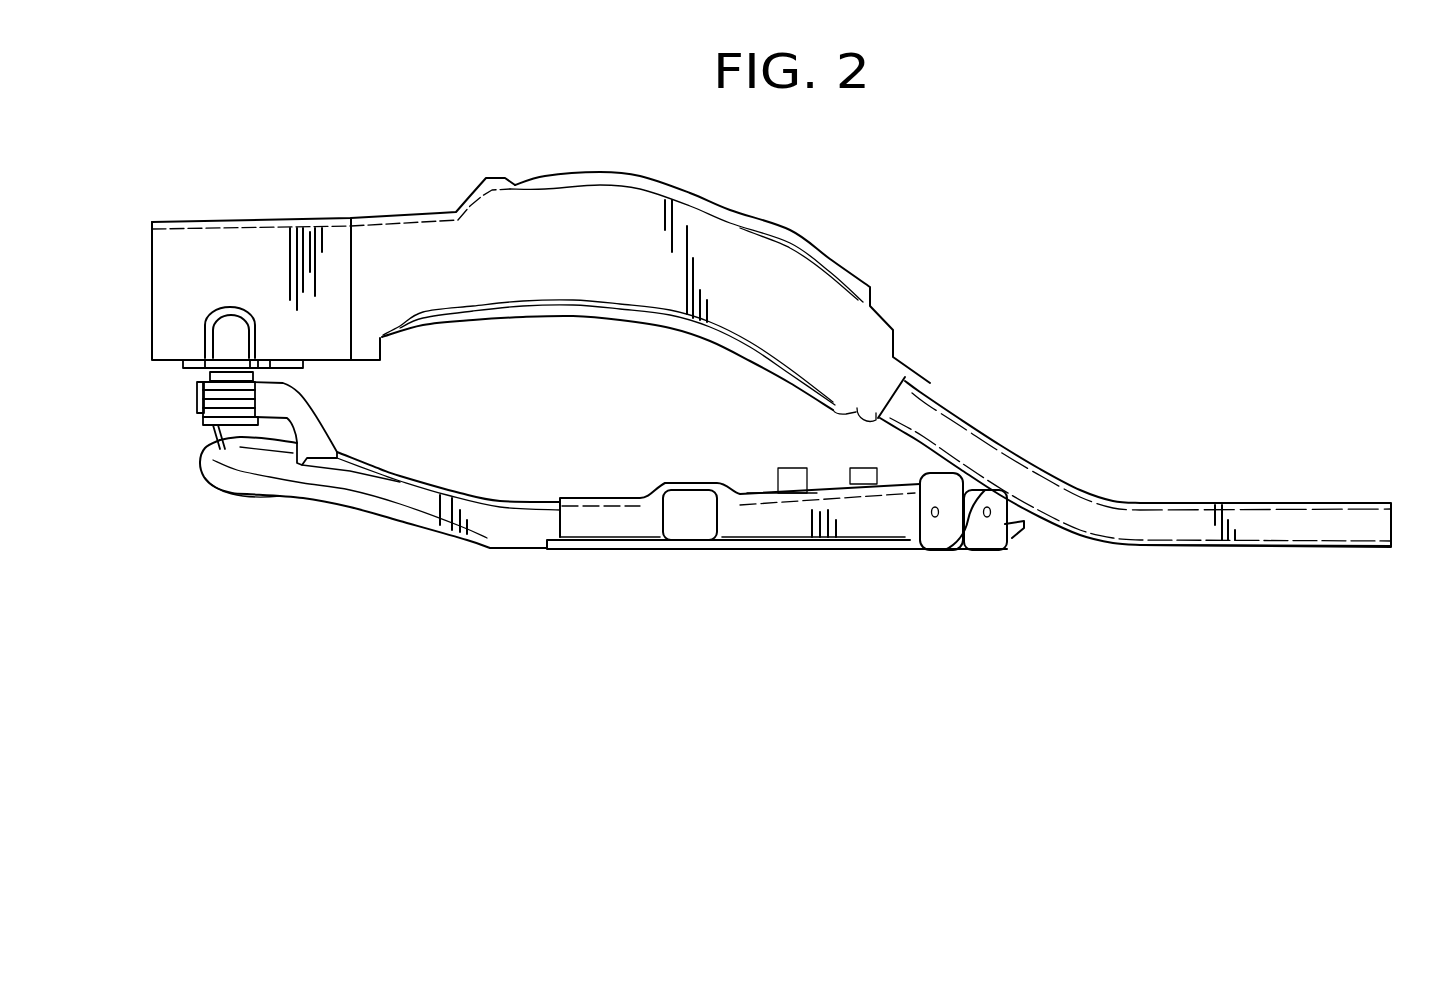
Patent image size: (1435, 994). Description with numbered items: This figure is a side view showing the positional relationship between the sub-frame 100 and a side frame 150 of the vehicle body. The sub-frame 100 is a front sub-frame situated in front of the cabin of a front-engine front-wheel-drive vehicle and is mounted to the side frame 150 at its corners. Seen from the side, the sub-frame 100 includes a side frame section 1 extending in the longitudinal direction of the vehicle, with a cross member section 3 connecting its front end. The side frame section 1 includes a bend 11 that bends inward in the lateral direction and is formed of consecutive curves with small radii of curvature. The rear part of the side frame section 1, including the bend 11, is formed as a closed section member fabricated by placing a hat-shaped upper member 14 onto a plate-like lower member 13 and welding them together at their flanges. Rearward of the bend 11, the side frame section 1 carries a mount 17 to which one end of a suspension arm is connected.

The side frame 150 is at (797, 262).
The sub-frame 100 is at (595, 509).
The side frame section 1 is at (483, 523).
The cross member section 3 is at (201, 468).
The bend 11 is at (590, 523).
The mount 17 is at (690, 523).
The upper member 14 is at (777, 527).
The lower member 13 is at (860, 557).